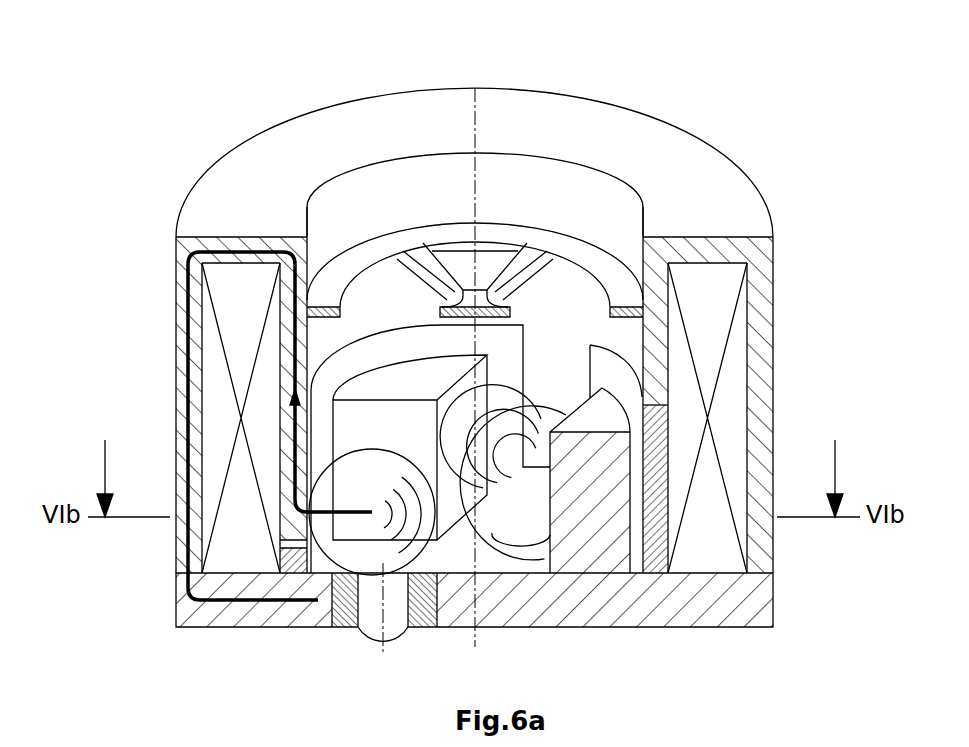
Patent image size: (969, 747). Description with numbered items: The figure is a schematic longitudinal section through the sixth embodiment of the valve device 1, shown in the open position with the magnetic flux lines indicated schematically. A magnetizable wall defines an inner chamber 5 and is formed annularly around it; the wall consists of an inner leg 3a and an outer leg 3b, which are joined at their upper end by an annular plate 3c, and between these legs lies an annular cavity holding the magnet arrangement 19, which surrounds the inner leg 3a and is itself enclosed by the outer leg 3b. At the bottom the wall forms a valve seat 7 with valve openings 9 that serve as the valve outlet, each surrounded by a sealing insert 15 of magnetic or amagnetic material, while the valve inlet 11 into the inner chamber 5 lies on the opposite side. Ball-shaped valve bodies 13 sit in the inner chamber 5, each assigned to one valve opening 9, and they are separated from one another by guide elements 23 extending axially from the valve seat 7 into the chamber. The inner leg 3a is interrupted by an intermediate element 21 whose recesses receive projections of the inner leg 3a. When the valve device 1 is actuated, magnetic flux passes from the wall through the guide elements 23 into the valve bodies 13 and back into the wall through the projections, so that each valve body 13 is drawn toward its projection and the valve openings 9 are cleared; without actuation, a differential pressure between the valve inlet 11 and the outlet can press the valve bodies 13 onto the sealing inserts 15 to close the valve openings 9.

The valve device 1 is at (182, 124).
The inner leg 3a is at (653, 378).
The outer leg 3b is at (755, 360).
The annular plate 3c is at (705, 250).
The inner chamber 5 is at (592, 152).
The valve seat 7 is at (543, 642).
The valve opening 9 is at (371, 639).
The valve inlet 11 is at (387, 163).
The valve body 13 is at (352, 553).
The sealing insert 15 is at (355, 263).
The magnet arrangement 19 is at (708, 322).
The intermediate element 21 is at (655, 467).
The guide element 23 is at (587, 528).